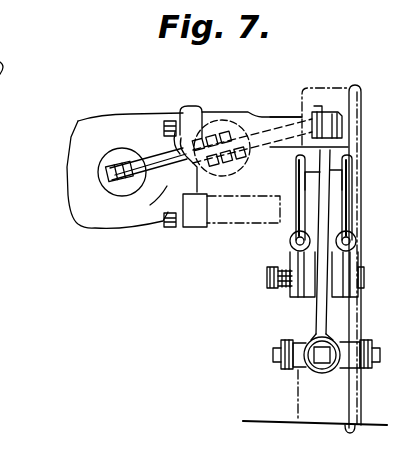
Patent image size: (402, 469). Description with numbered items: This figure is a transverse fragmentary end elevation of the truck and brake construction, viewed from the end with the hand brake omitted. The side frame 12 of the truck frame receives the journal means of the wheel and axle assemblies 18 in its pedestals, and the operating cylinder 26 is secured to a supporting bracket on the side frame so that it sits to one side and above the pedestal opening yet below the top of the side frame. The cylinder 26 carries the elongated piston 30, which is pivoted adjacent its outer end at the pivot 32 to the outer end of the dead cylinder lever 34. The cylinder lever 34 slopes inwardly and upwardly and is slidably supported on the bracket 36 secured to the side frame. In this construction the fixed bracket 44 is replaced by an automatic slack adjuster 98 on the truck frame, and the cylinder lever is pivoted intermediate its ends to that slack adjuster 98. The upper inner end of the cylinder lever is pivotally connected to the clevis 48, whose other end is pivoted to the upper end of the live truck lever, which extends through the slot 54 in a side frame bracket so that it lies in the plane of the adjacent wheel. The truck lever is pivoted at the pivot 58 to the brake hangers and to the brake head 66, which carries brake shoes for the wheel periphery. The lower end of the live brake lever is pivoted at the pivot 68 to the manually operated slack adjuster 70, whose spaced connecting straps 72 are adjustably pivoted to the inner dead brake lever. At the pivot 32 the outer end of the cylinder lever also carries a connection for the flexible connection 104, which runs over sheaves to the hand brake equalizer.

The flexible connection 104 is at (14, 4).
The side frame 12 is at (272, 135).
The wheel and axle assemblies 18 is at (312, 398).
The operating cylinder 26 is at (72, 163).
The elongated piston 30 is at (113, 184).
The pivot 32 is at (118, 188).
The dead cylinder lever 34 is at (157, 150).
The bracket 36 is at (149, 203).
The bracket 44 is at (203, 213).
The clevis 48 is at (322, 112).
The slot 54 is at (326, 214).
The pivot 58 is at (361, 272).
The brake head 66 is at (316, 312).
The pivot 68 is at (274, 355).
The manually operated slack adjuster 70 is at (316, 359).
The connecting straps 72 is at (284, 338).
The automatic slack adjuster 98 is at (225, 112).